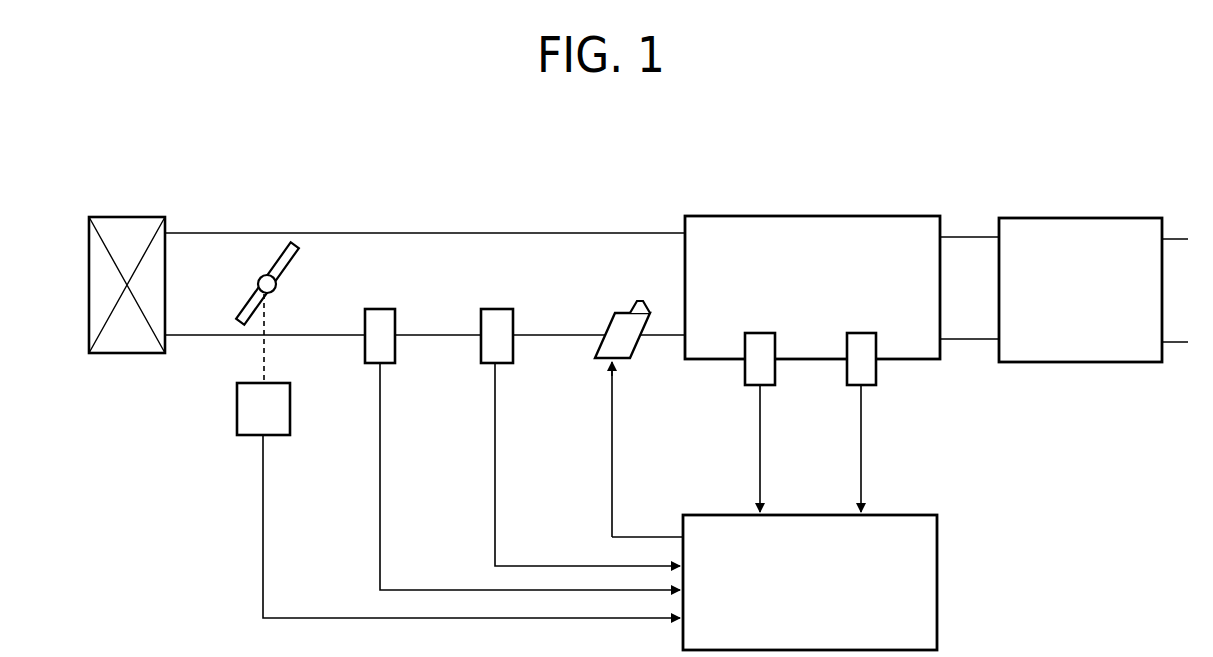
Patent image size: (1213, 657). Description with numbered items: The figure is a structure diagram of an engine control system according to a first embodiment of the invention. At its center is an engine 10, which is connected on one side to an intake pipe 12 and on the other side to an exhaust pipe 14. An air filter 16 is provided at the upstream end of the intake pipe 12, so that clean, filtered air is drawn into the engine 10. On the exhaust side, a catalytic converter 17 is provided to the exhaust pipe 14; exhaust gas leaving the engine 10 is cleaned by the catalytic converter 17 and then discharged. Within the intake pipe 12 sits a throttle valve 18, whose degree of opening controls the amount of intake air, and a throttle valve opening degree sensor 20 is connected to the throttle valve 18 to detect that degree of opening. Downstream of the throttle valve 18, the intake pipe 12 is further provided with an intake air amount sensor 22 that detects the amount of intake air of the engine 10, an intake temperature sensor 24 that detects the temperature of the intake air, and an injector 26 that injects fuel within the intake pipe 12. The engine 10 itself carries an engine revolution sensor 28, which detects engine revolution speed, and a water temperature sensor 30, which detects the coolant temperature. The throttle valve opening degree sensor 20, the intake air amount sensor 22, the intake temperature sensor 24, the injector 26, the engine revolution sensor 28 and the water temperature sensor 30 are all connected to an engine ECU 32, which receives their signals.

The engine 10 is at (809, 216).
The intake pipe 12 is at (585, 233).
The exhaust pipe 14 is at (972, 237).
The air filter 16 is at (122, 217).
The catalytic converter 17 is at (1082, 218).
The throttle valve 18 is at (243, 302).
The throttle valve opening degree sensor 20 is at (237, 412).
The intake air amount sensor 22 is at (378, 309).
The intake temperature sensor 24 is at (493, 309).
The injector 26 is at (605, 314).
The engine revolution sensor 28 is at (745, 377).
The water temperature sensor 30 is at (876, 377).
The engine ECU 32 is at (937, 588).